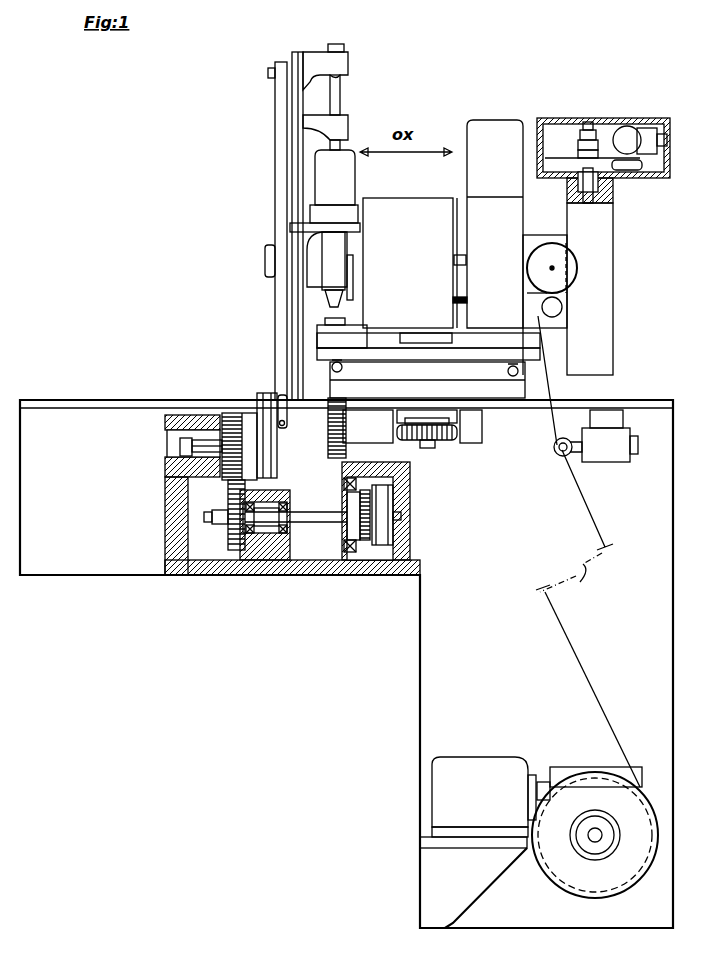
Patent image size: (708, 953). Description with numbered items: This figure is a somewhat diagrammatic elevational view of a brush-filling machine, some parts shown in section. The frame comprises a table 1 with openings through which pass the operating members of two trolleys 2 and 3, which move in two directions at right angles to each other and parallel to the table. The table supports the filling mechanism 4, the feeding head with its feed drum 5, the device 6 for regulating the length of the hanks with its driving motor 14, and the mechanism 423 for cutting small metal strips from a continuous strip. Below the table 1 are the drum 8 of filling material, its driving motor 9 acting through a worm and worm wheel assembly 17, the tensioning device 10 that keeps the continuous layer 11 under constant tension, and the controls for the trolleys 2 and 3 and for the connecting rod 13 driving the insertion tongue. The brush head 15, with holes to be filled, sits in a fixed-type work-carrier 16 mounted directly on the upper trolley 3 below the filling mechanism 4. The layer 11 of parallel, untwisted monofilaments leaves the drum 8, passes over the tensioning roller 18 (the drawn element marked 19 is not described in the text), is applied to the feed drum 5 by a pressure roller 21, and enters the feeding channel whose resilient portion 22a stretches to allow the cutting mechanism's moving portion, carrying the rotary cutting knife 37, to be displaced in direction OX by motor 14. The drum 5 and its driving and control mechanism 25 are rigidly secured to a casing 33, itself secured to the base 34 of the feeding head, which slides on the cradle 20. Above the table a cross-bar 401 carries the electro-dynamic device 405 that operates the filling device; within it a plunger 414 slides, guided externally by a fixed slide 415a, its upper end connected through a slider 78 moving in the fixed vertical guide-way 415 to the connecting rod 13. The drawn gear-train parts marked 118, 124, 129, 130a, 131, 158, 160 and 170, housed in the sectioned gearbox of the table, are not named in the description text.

The table 1 is at (635, 404).
The trolley 2 is at (505, 390).
The trolley 3 is at (531, 353).
The filling mechanism 4 is at (348, 131).
The feed drum 5 is at (554, 268).
The device for regulating the length of the hanks 6 is at (405, 218).
The drum for the filling material 8 is at (627, 870).
The driving motor 9 is at (478, 775).
The tensioning device 10 is at (603, 452).
The layer of filling material 11 is at (567, 638).
The connecting rod 13 is at (281, 227).
The driving motor 14 is at (490, 128).
The brush head 15 is at (330, 322).
The work-carrier 16 is at (344, 335).
The worm and worm wheel assembly 17 is at (562, 772).
The tensioning roller 18 is at (555, 452).
The idler pulley 19 is at (568, 441).
The cradle 20 is at (517, 340).
The pressure roller 21 is at (553, 308).
The resilient portion 22a is at (461, 300).
The mechanism for driving and controlling the rotation of the feeding drum 25 is at (575, 117).
The casing 33 is at (508, 212).
The base 34 is at (413, 335).
The rotary cutting knife 37 is at (353, 298).
The slider 78 is at (323, 66).
The gear 118 is at (233, 413).
The gearbox housing 124 is at (267, 523).
The pinion 129 is at (232, 540).
The clutch 130a is at (371, 523).
The gear 131 is at (350, 530).
The worm gear 158 is at (445, 436).
The bolt 160 is at (330, 368).
The rack 170 is at (343, 445).
The cross-bar 401 is at (349, 230).
The electro-dynamic device 405 is at (354, 184).
The plunger 414 is at (337, 100).
The vertical guide-way 415 is at (290, 105).
The fixed slide 415a is at (331, 128).
The mechanism for cutting the small metal strips 423 is at (272, 263).